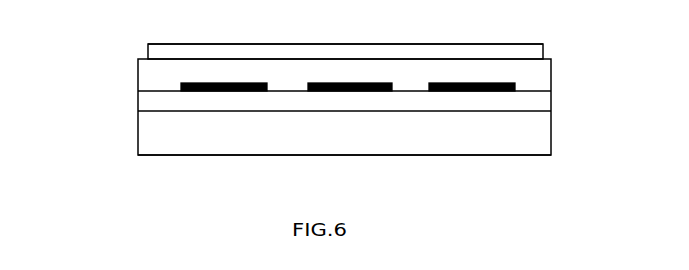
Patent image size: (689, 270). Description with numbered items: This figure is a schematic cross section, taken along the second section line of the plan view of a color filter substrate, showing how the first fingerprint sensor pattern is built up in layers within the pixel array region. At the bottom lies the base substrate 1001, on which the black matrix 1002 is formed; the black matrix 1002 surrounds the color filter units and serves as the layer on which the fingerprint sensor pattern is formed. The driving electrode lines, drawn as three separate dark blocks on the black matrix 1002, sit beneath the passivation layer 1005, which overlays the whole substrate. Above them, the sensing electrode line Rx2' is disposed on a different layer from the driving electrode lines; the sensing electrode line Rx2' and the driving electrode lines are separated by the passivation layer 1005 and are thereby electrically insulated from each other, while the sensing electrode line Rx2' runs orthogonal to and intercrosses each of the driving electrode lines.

The base substrate 1001 is at (163, 140).
The black matrix 1002 is at (163, 108).
The passivation layer 1005 is at (150, 70).
The sensing electrode line Rx2' is at (385, 24).